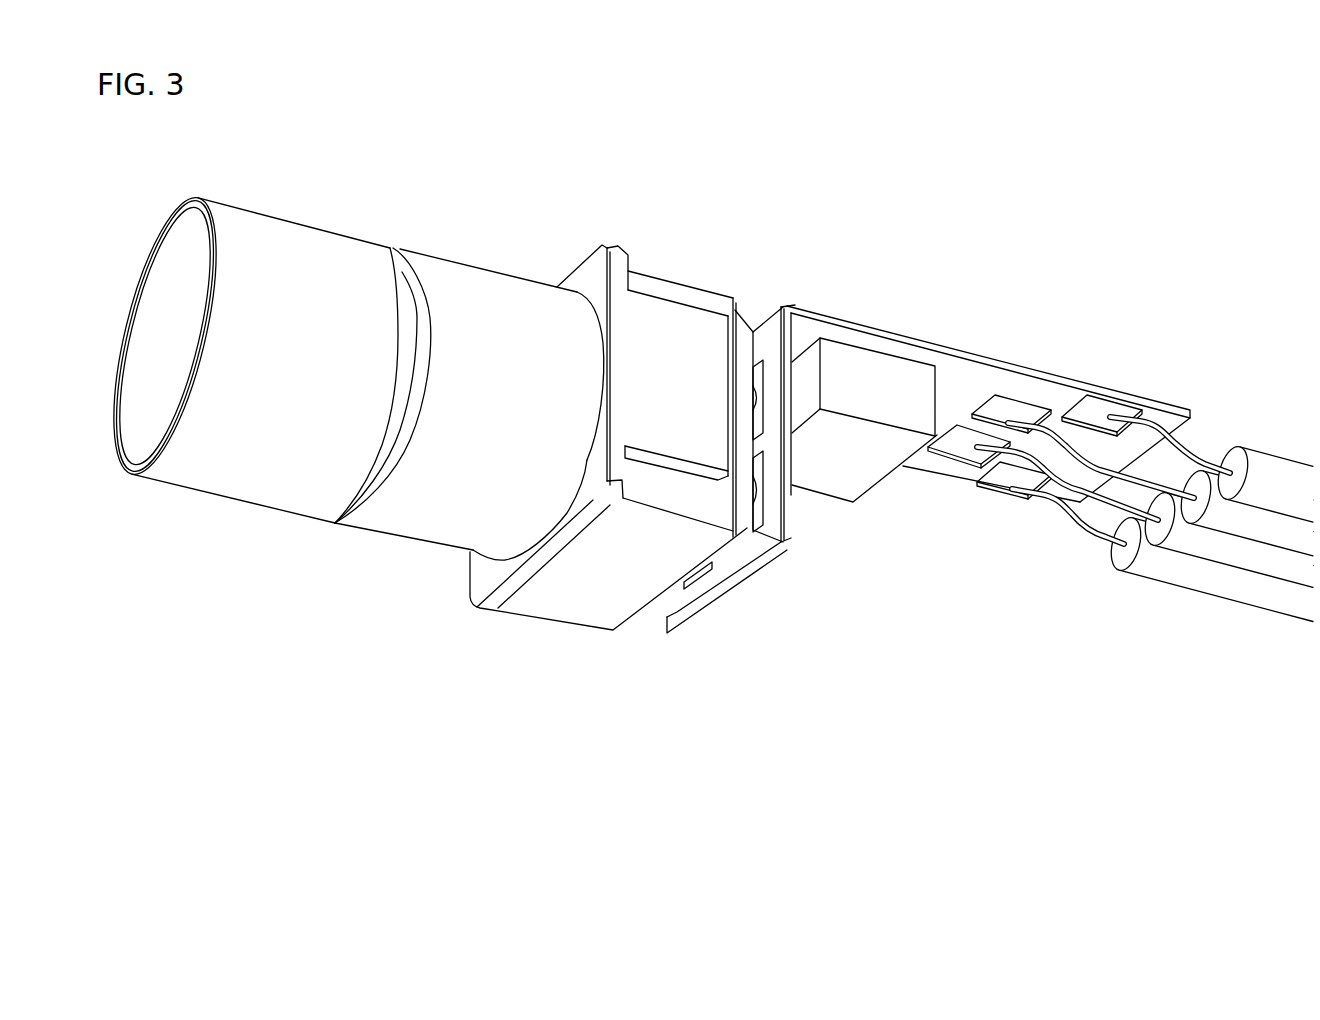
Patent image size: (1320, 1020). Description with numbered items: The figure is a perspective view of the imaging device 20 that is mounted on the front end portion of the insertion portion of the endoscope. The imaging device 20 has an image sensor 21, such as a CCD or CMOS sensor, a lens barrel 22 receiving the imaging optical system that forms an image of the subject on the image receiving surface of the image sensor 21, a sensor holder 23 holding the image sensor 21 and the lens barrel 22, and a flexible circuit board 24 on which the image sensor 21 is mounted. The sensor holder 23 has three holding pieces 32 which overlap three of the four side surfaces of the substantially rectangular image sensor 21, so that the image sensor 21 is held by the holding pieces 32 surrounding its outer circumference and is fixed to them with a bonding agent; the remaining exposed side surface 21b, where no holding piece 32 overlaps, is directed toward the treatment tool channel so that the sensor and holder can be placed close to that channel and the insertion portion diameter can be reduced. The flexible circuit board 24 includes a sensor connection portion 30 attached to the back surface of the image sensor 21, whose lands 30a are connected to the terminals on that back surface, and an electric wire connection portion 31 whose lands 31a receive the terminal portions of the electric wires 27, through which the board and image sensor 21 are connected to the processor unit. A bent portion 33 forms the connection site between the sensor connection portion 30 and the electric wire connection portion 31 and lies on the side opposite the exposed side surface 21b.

The imaging device 20 is at (1022, 208).
The image sensor 21 is at (646, 354).
The exposed side surface 21b is at (580, 610).
The lens barrel 22 is at (300, 220).
The sensor holder 23 is at (497, 272).
The flexible circuit board 24 is at (853, 192).
The electric wires 27 is at (1282, 456).
The sensor connection portion 30 is at (767, 464).
The lands 30a is at (763, 425).
The electric wire connection portion 31 is at (988, 381).
The lands 31a is at (1015, 412).
The holding pieces 32 is at (679, 305).
The bent portion 33 is at (787, 332).